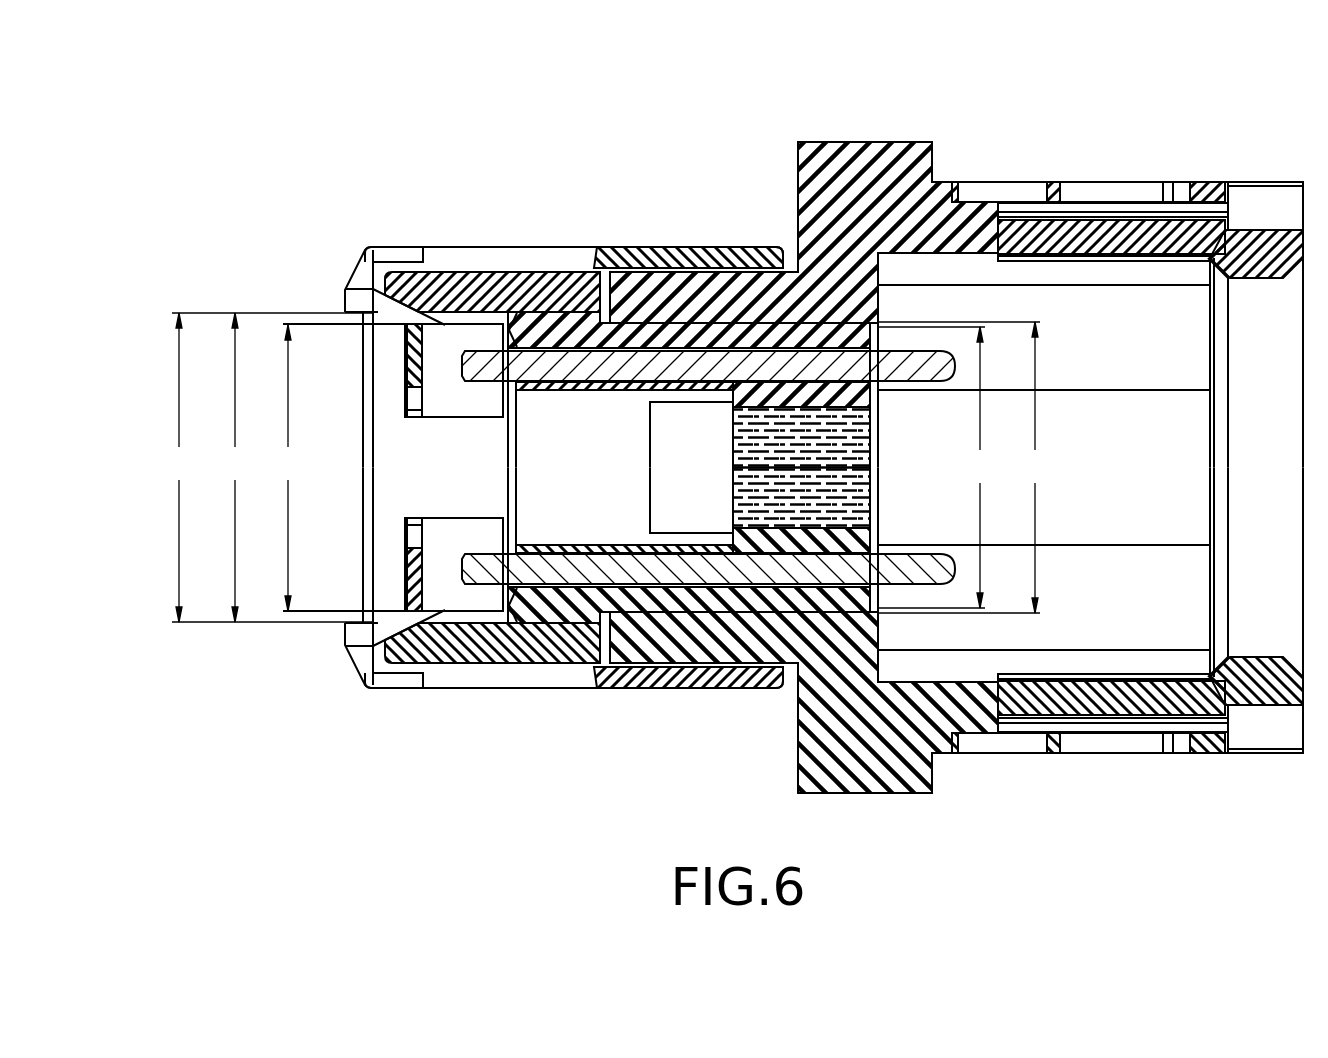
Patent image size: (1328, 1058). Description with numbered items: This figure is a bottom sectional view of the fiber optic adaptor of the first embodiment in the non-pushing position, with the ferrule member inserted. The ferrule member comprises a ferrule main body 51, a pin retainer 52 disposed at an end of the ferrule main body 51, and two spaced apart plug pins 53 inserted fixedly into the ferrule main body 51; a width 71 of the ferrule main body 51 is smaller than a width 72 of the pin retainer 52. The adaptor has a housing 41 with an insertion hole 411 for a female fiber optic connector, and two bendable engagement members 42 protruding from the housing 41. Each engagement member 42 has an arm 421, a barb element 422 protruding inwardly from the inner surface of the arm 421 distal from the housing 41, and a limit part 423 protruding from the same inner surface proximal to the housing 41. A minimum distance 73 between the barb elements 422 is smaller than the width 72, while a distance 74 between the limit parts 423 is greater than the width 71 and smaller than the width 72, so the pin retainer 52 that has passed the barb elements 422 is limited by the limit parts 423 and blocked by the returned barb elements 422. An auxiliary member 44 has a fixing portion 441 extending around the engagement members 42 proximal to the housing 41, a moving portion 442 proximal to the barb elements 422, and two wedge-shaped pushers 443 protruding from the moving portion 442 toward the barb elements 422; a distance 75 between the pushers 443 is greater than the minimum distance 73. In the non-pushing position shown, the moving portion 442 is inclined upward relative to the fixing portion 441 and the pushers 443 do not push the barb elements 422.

The housing 41 is at (1027, 215).
The insertion hole 411 is at (1153, 326).
The engagement member 42 is at (493, 249).
The arm 421 is at (767, 280).
The barb element 422 is at (456, 612).
The limit part 423 is at (617, 316).
The auxiliary member 44 is at (395, 245).
The fixing portion 441 is at (686, 686).
The moving portion 442 is at (455, 680).
The pusher 443 is at (380, 308).
The ferrule main body 51 is at (683, 324).
The pin retainer 52 is at (567, 300).
The plug pin 53 is at (565, 562).
The width of the ferrule main body 71 is at (936, 467).
The width of the pin retainer 72 is at (235, 467).
The minimum distance between the barb elements 73 is at (387, 468).
The distance between the limit parts 74 is at (965, 467).
The distance between the pushers 75 is at (267, 467).